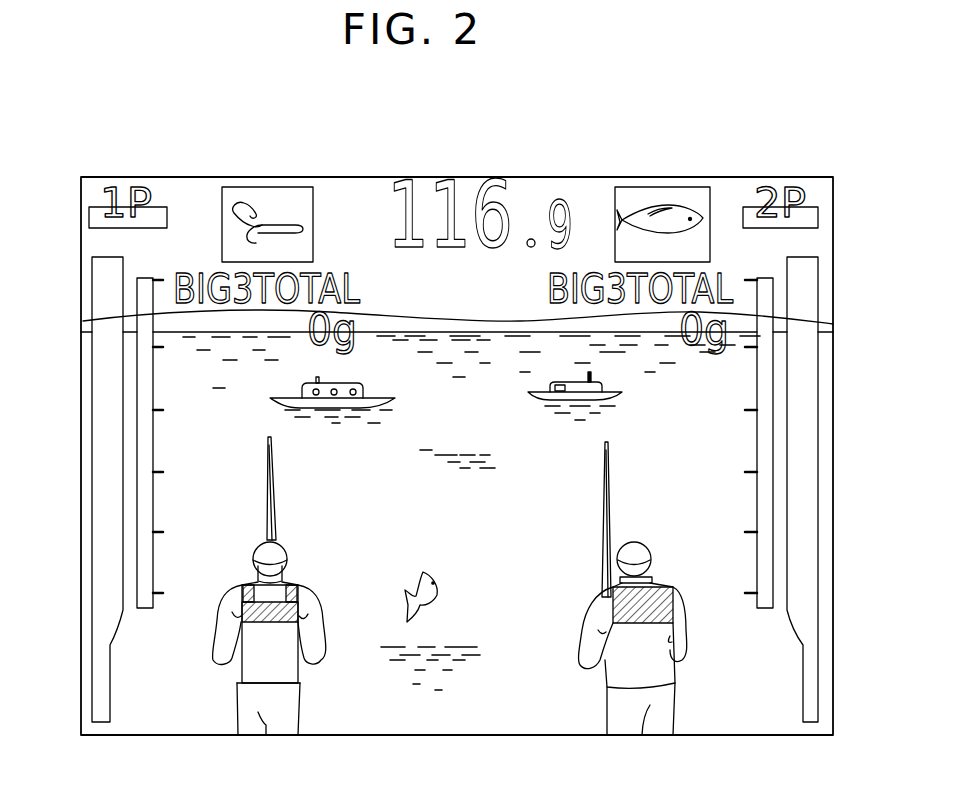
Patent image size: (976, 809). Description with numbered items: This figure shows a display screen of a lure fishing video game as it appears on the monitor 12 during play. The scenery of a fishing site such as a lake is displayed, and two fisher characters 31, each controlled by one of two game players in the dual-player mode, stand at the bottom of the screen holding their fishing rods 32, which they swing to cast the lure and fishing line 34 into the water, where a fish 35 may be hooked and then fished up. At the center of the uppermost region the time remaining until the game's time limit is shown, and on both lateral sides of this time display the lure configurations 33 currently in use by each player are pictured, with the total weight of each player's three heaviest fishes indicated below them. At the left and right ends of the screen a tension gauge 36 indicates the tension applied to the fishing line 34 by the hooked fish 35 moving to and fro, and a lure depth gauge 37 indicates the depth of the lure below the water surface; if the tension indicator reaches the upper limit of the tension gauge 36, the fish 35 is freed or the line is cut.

The monitor 12 is at (518, 177).
The fisher character 31 is at (290, 673).
The fishing rod 32 is at (268, 525).
The lure configuration 33 is at (250, 205).
The fishing line 34 is at (276, 510).
The fish 35 is at (419, 592).
The tension gauge 36 is at (92, 412).
The lure depth gauge 37 is at (140, 510).